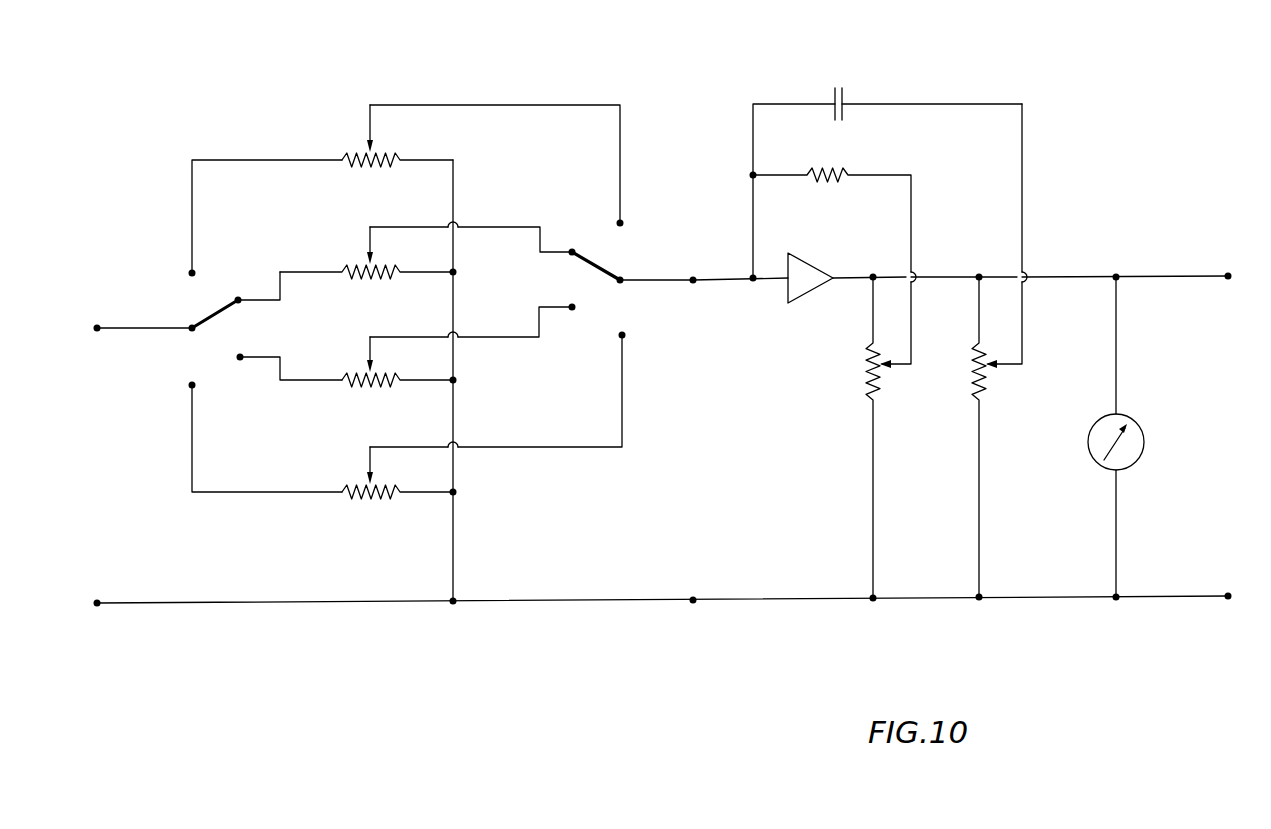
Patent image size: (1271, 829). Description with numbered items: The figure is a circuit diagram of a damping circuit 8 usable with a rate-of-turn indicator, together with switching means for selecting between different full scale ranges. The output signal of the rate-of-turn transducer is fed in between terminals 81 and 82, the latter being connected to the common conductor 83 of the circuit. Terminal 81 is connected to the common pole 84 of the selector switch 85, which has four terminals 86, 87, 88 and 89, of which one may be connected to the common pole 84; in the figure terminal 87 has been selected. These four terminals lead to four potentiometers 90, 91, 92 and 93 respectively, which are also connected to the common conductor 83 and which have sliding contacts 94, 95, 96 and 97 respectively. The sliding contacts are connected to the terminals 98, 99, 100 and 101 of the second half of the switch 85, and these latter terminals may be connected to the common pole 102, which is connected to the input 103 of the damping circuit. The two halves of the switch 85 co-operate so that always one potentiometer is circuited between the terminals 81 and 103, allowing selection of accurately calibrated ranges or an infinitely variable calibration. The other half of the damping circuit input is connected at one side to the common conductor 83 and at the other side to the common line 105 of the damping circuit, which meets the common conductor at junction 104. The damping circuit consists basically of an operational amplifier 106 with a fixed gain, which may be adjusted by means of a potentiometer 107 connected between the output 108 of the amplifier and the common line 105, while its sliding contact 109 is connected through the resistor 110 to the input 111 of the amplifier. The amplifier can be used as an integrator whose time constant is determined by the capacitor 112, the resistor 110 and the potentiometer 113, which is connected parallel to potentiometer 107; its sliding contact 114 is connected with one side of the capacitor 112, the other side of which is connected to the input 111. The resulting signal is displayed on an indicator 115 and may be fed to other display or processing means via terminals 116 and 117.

The circuit 8 is at (1028, 100).
The input terminal 81 is at (96, 331).
The input terminal 82 is at (96, 606).
The common conductor 83 is at (316, 603).
The common pole 84 is at (186, 333).
The selector switch 85 is at (229, 356).
The switch terminal 86 is at (189, 270).
The switch terminal 87 is at (238, 297).
The switch terminal 88 is at (241, 360).
The switch terminal 89 is at (190, 388).
The potentiometer 90 is at (349, 166).
The potentiometer 91 is at (349, 278).
The potentiometer 92 is at (349, 387).
The potentiometer 93 is at (349, 500).
The sliding contact 94 is at (367, 133).
The sliding contact 95 is at (367, 247).
The sliding contact 96 is at (367, 358).
The sliding contact 97 is at (367, 470).
The switch terminal 98 is at (623, 221).
The switch terminal 99 is at (573, 249).
The switch terminal 100 is at (572, 310).
The switch terminal 101 is at (625, 338).
The common pole 102 is at (623, 283).
The input 103 is at (693, 277).
The junction 104 is at (694, 597).
The common line 105 is at (850, 600).
The operational amplifier 106 is at (802, 262).
The potentiometer 107 is at (866, 376).
The output 108 is at (856, 282).
The sliding contact 109 is at (905, 366).
The resistor 110 is at (840, 170).
The input 111 is at (770, 281).
The capacitor 112 is at (850, 103).
The potentiometer 113 is at (975, 398).
The sliding contact 114 is at (1011, 366).
The indicator 115 is at (1145, 442).
The output terminal 116 is at (1228, 273).
The output terminal 117 is at (1228, 600).